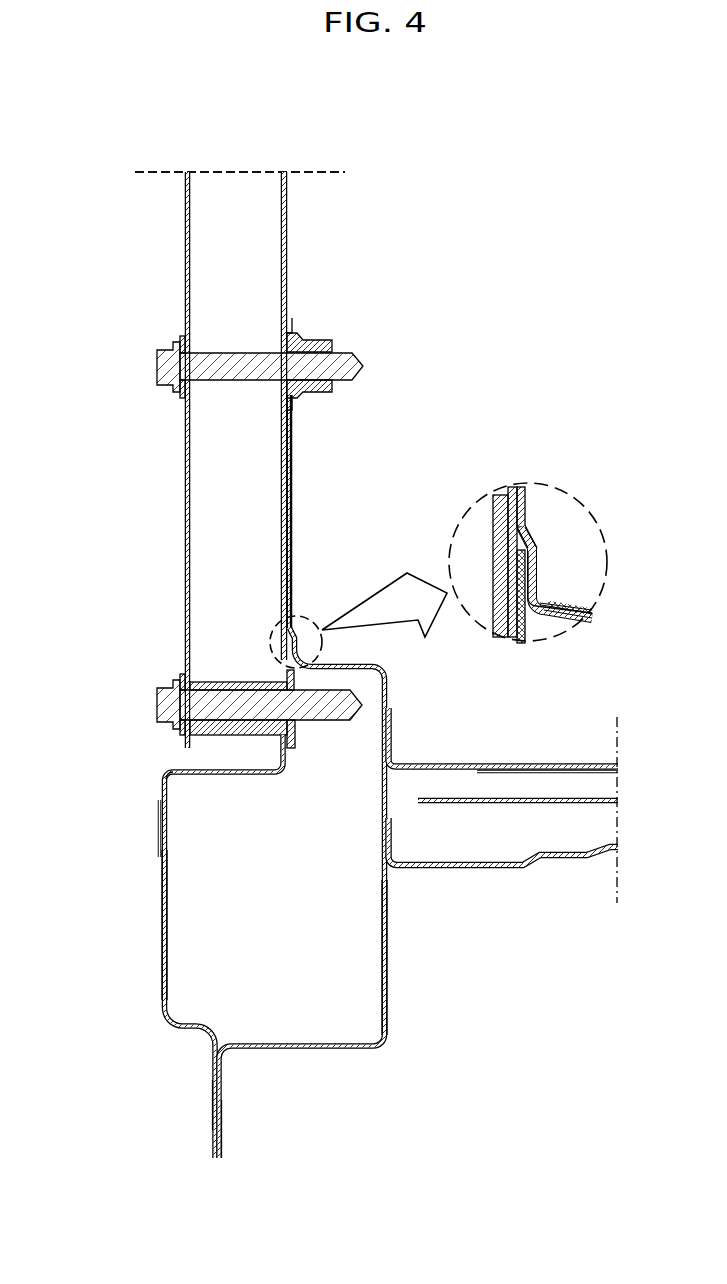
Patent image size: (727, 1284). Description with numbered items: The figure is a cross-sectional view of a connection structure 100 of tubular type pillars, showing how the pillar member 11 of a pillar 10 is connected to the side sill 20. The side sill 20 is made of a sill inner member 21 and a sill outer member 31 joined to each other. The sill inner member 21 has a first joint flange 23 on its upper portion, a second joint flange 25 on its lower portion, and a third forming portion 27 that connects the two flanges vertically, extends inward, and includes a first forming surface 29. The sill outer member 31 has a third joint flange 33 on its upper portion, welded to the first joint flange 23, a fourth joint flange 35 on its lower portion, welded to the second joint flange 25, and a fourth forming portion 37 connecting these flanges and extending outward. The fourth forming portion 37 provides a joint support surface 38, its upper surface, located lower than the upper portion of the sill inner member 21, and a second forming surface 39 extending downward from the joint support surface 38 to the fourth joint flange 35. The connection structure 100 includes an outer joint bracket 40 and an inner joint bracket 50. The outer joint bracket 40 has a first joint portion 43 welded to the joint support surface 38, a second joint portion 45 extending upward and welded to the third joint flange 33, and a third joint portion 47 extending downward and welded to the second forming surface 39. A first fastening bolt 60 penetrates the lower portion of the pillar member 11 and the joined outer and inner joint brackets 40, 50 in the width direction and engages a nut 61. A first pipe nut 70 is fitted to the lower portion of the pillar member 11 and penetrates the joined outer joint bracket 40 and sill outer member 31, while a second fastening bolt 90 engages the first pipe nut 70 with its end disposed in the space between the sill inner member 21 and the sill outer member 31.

The connection structure 100 is at (410, 113).
The pillar 10 is at (173, 253).
The pillar member 11 is at (185, 462).
The outer joint bracket 40 is at (301, 479).
The inner joint bracket 50 is at (303, 428).
The second joint portion 45 is at (528, 528).
The first fastening bolt 60 is at (145, 365).
The nut 61 is at (315, 334).
The second fastening bolt 90 is at (145, 703).
The first pipe nut 70 is at (229, 671).
The first joint portion 43 is at (220, 772).
The joint support surface 38 is at (163, 798).
The third joint portion 47 is at (161, 840).
The second forming surface 39 is at (162, 905).
The fourth forming portion 37 is at (151, 958).
The fourth joint flange 35 is at (215, 1095).
The second joint flange 25 is at (222, 1118).
The side sill 20 is at (483, 965).
The sill inner member 21 is at (402, 968).
The first joint flange 23 is at (541, 597).
The sill outer member 31 is at (178, 927).
The third joint flange 33 is at (558, 609).
The third forming portion 27 is at (402, 890).
The first forming surface 29 is at (388, 924).